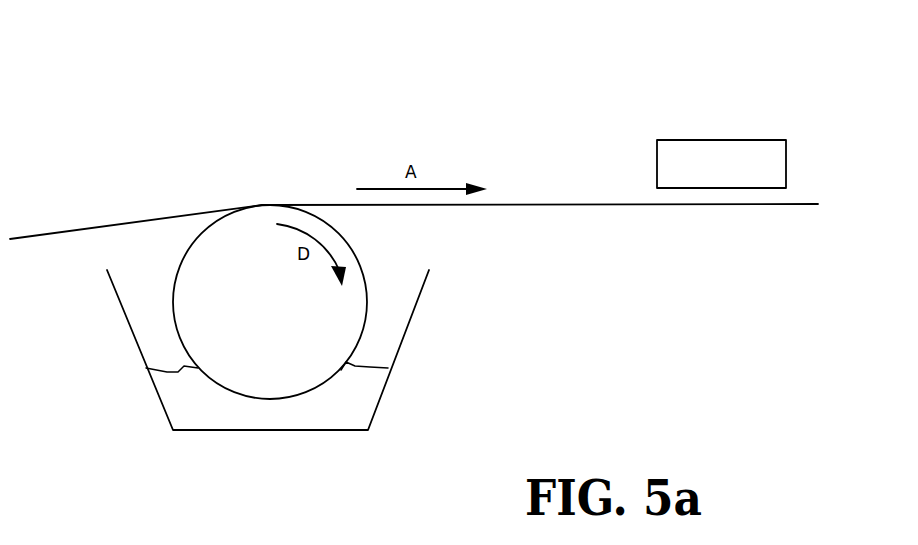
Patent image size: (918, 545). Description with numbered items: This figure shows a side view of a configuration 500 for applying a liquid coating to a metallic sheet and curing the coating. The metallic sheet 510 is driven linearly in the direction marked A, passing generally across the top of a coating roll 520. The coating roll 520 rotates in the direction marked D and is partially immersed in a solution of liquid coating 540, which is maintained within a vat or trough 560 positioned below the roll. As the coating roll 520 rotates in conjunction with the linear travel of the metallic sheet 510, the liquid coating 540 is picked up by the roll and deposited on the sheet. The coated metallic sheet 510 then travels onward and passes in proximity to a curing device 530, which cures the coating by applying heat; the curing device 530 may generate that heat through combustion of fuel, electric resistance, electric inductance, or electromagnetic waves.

The coating system 500 is at (131, 70).
The metallic sheet 510 is at (38, 239).
The coating roll 520 is at (176, 270).
The curing device 530 is at (720, 140).
The liquid coating 540 is at (362, 393).
The vat or trough 560 is at (420, 293).